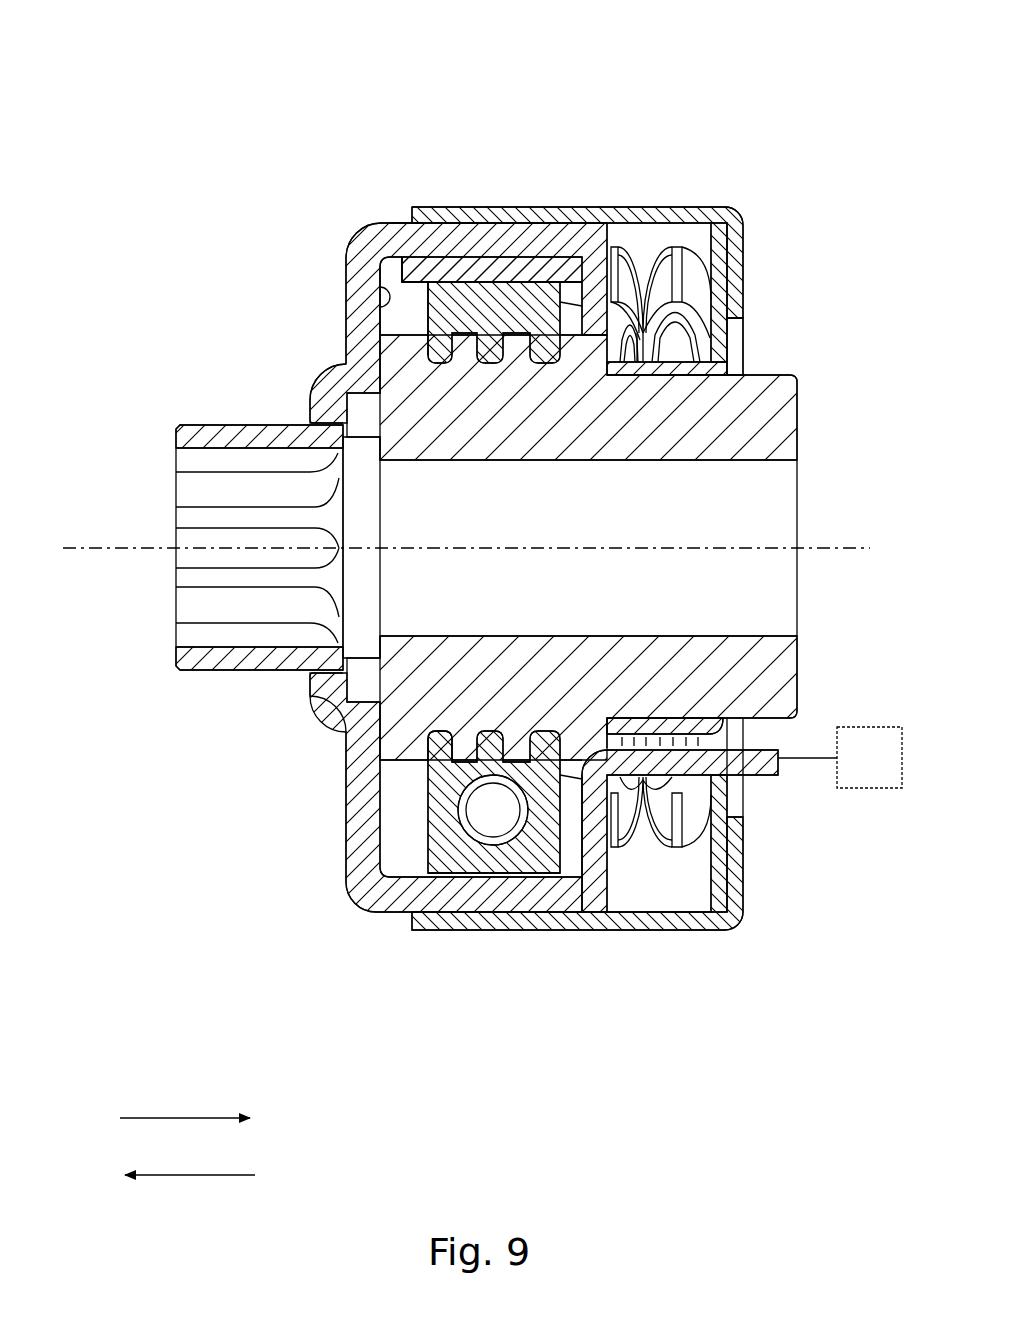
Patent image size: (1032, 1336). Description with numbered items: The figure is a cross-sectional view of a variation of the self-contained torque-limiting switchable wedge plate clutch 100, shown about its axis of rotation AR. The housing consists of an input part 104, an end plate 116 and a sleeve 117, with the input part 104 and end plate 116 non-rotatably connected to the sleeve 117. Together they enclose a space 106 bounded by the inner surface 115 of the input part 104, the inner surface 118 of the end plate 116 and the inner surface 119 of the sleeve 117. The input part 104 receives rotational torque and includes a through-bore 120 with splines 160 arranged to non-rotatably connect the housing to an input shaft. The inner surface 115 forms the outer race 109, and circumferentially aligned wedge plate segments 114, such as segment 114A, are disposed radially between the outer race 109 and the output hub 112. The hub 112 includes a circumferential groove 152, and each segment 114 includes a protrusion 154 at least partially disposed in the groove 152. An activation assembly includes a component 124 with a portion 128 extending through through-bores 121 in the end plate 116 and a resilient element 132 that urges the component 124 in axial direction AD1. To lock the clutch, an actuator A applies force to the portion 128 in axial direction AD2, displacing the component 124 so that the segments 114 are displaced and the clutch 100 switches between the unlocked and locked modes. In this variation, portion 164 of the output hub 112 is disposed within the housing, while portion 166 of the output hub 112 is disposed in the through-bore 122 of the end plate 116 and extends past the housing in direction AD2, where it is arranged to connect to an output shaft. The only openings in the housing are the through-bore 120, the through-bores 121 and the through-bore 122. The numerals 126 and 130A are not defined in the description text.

The switchable wedge plate clutch 100 is at (637, 56).
The input part 104 is at (256, 418).
The space 106 is at (647, 243).
The outer race 109 is at (437, 287).
The output hub 112 is at (374, 359).
The circumferentially aligned wedge plate segments 114 is at (473, 865).
The wedge plate segment 114A is at (455, 290).
The inner surface of input part 115 is at (368, 300).
The end plate 116 is at (732, 338).
The sleeve 117 is at (501, 201).
The inner surface of end plate 118 is at (735, 873).
The inner surface of sleeve 119 is at (655, 906).
The through-bore 120 is at (183, 457).
The through-bore 121 is at (723, 733).
The through-bore 122 is at (728, 370).
The component 124 is at (552, 251).
The bore 126 is at (487, 873).
The portion 128 is at (758, 778).
The retaining plate 130A is at (405, 262).
The resilient element 132 is at (688, 248).
The circumferential groove 152 is at (427, 736).
The protrusion 154 is at (430, 757).
The splines 160 is at (185, 598).
The portion of output hub 164 is at (427, 678).
The portion of output hub 166 is at (690, 668).
The axis of rotation AR is at (120, 548).
The axial direction AD1 is at (186, 1177).
The axial direction AD2 is at (173, 1116).
The actuator A is at (840, 762).